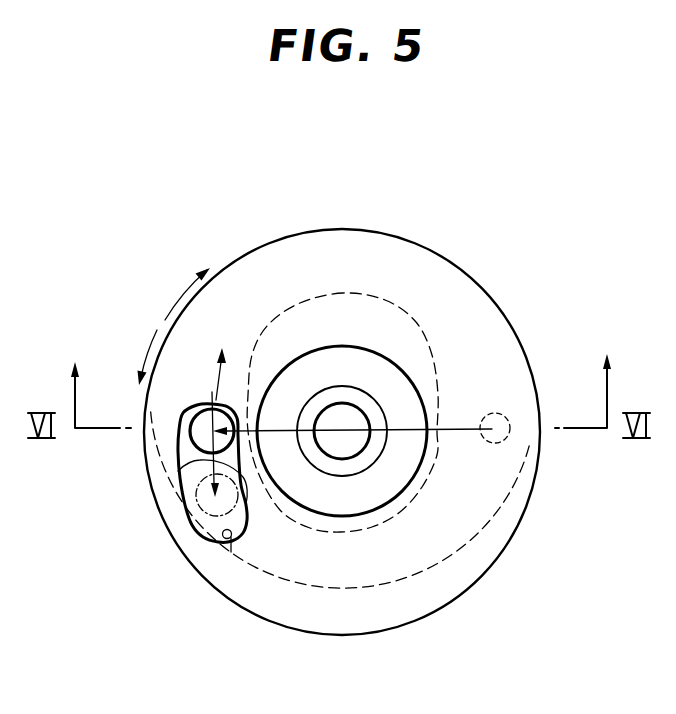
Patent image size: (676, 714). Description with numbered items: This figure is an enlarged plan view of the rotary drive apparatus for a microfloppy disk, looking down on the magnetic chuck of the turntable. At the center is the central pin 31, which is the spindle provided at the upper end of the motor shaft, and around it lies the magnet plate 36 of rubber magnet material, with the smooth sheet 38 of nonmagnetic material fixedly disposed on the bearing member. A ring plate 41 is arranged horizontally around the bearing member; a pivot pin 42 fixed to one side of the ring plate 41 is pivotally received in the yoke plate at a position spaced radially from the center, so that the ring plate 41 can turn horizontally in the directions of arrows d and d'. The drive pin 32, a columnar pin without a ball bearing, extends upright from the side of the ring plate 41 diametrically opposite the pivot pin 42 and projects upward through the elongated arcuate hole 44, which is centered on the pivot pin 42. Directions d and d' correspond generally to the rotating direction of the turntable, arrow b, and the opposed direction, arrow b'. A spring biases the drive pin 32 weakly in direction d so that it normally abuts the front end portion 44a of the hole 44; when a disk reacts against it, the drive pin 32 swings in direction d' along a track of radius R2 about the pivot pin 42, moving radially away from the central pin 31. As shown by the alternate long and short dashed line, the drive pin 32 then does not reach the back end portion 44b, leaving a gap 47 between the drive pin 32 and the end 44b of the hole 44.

The central pin 31 is at (352, 413).
The drive pin 32 is at (202, 428).
The magnet plate 36 is at (337, 252).
The smooth sheet 38 is at (350, 509).
The ring plate 41 is at (411, 577).
The pivot pin 42 is at (485, 442).
The elongated arcuate hole 44 is at (241, 486).
The end portion of the hole 44a is at (231, 398).
The end portion of the hole 44b is at (231, 552).
The gap 47 is at (210, 538).
The radius of the drive pin track R2 is at (398, 429).
The rotating direction of the turntable b is at (182, 289).
The direction opposed to the turntable rotating direction b' is at (136, 354).
The direction of drive pin movement d is at (199, 374).
The direction of drive pin movement d' is at (152, 474).